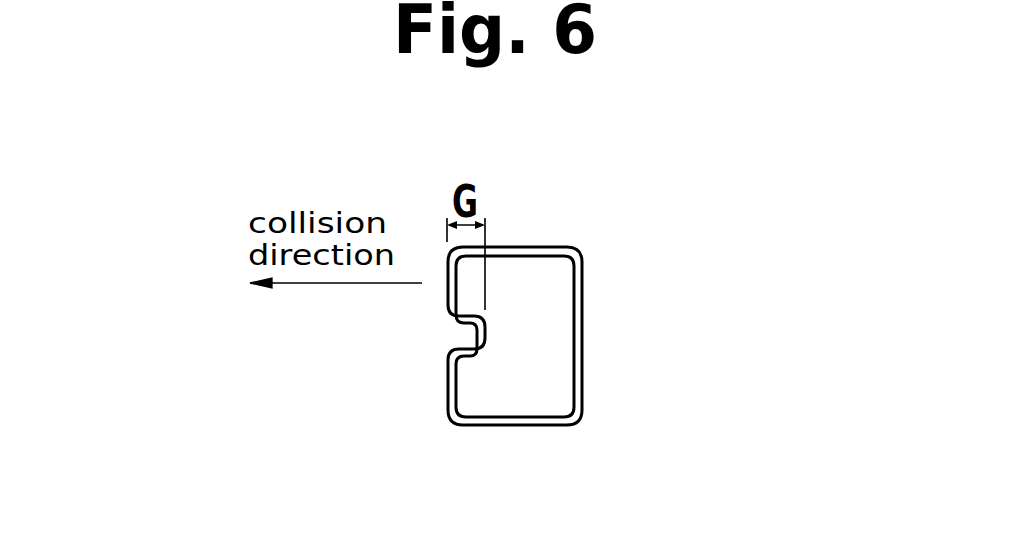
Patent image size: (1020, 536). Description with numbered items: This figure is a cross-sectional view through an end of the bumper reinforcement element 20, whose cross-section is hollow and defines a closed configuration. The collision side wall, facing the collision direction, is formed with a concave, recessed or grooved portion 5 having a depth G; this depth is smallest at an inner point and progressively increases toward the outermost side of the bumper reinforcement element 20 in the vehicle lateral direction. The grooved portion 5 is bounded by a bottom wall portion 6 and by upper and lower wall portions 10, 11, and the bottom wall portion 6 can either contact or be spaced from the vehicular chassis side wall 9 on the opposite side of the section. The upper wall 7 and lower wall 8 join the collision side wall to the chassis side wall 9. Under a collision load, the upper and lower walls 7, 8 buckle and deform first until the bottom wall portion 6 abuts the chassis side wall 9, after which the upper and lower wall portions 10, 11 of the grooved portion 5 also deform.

The bumper reinforcement element 20 is at (583, 405).
The upper wall 7 is at (530, 247).
The lower wall 8 is at (486, 419).
The vehicular chassis side wall 9 is at (583, 278).
The grooved portion 5 is at (467, 335).
The bottom wall portion 6 is at (483, 336).
The upper wall portion 10 is at (466, 310).
The lower wall portion 11 is at (468, 355).